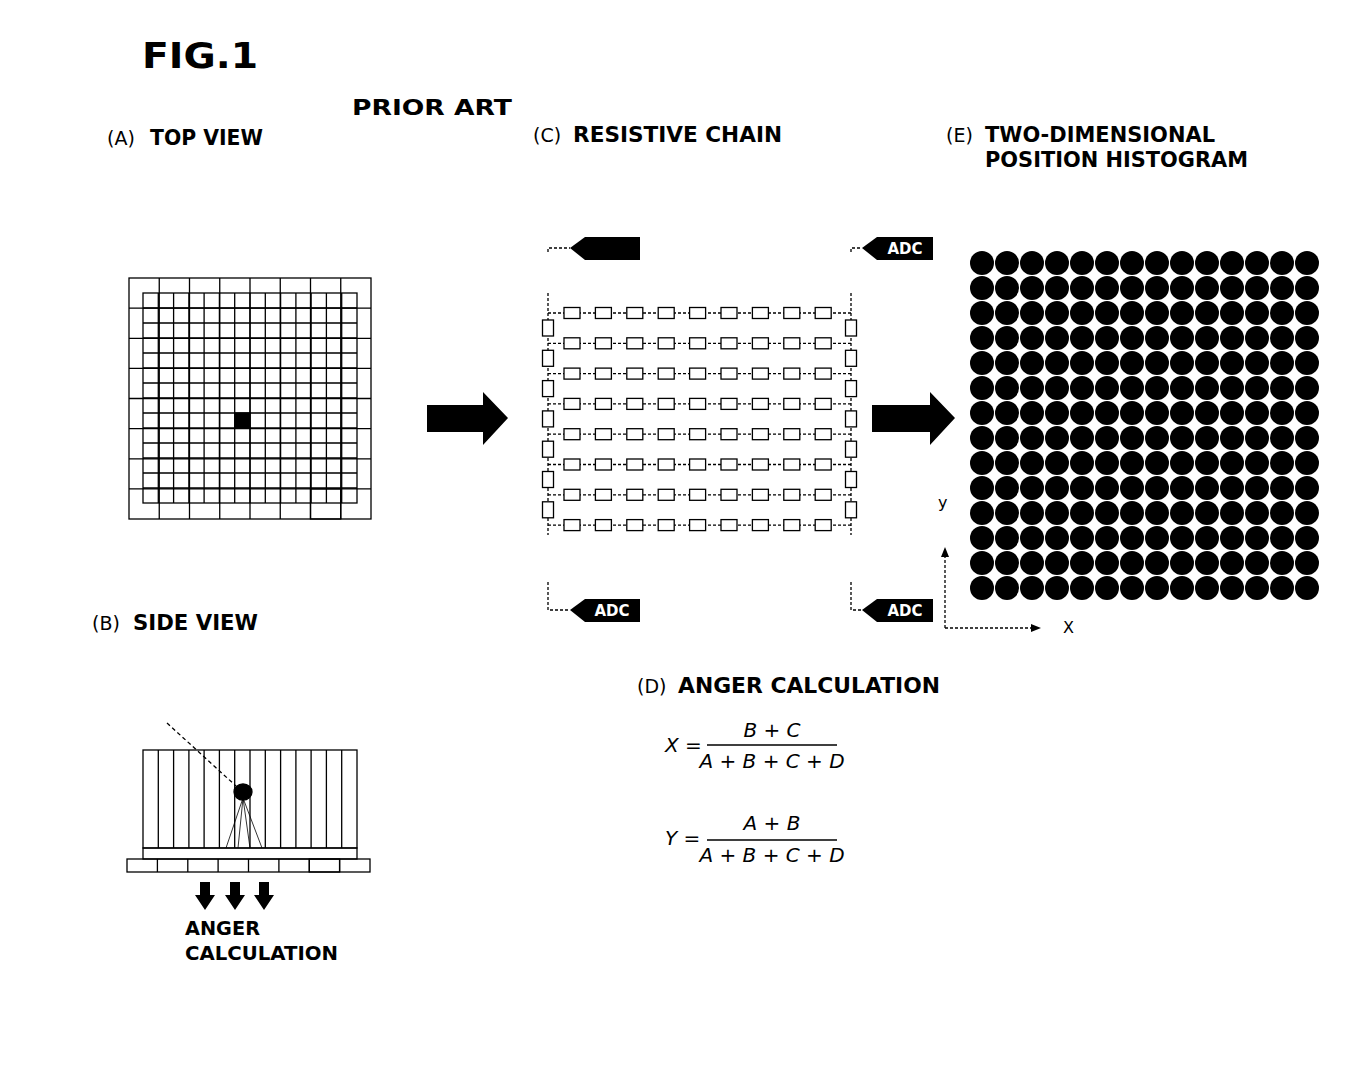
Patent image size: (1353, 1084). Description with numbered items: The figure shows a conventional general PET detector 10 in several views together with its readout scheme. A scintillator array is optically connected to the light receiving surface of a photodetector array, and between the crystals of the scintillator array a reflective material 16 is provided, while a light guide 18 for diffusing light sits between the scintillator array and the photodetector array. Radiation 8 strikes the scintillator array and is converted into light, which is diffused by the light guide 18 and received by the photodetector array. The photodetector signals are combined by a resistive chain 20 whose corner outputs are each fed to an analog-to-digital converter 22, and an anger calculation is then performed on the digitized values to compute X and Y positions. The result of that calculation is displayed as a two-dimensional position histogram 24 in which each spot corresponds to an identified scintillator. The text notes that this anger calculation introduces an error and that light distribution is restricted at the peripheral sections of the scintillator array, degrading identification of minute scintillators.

The radiation 8 is at (182, 735).
The PET detector 10 is at (279, 389).
The reflective material 16 is at (357, 763).
The light guide 18 is at (357, 851).
The resistive chain 20 is at (690, 258).
The analog-to-digital converter (ADC) 22 is at (586, 237).
The two-dimensional position histogram 24 is at (1027, 243).